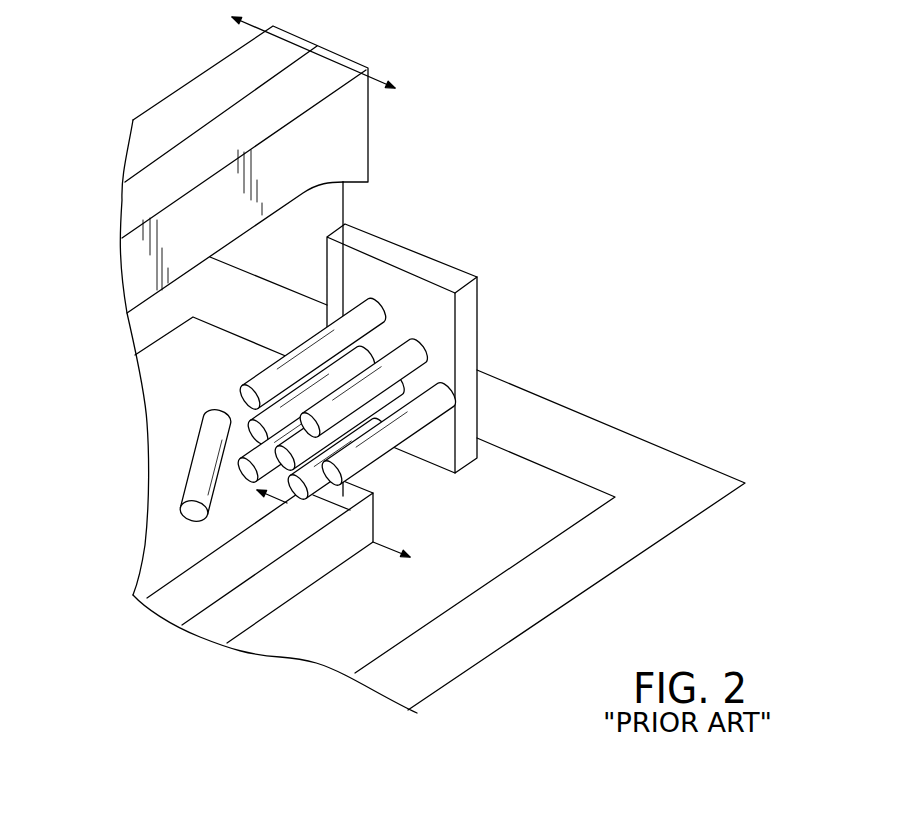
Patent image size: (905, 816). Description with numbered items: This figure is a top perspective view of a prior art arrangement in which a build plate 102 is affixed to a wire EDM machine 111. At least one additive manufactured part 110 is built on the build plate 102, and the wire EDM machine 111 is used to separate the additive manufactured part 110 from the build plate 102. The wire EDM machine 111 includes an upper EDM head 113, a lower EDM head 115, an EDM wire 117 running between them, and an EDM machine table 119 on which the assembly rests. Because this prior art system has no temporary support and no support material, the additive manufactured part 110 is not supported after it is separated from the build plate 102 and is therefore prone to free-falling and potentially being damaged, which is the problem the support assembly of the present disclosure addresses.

The build plate 102 is at (477, 323).
The additive manufactured part 110 is at (270, 388).
The wire EDM machine 111 is at (376, 137).
The upper EDM head 113 is at (345, 55).
The lower EDM head 115 is at (177, 578).
The EDM wire 117 is at (345, 205).
The EDM machine table 119 is at (675, 452).